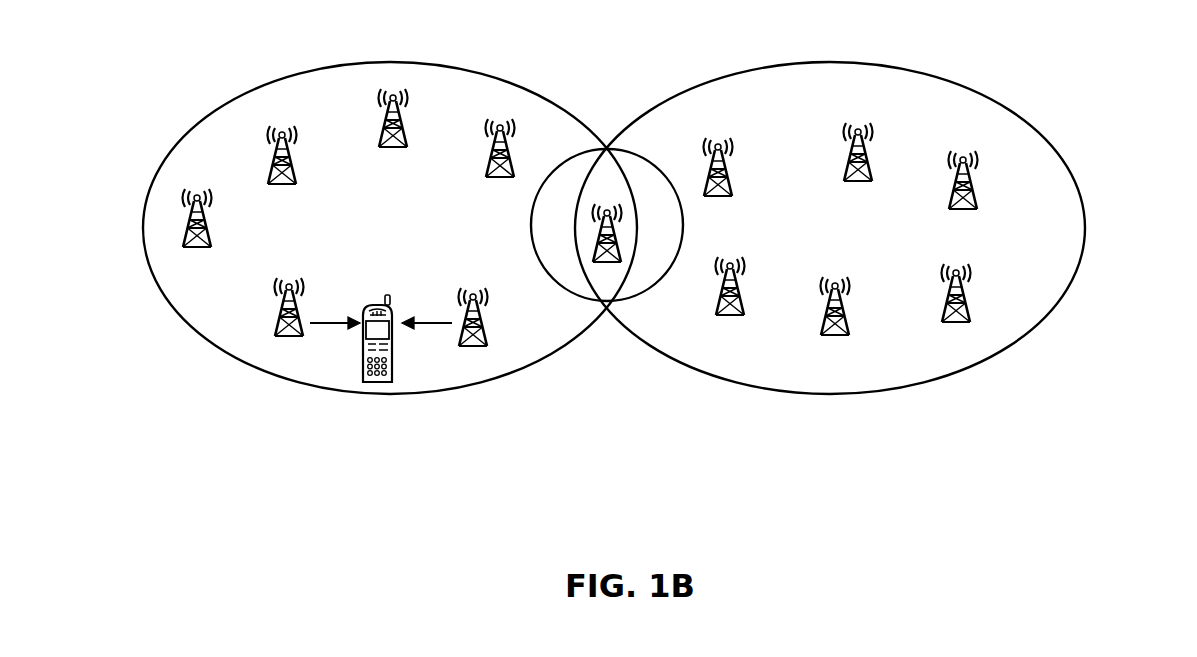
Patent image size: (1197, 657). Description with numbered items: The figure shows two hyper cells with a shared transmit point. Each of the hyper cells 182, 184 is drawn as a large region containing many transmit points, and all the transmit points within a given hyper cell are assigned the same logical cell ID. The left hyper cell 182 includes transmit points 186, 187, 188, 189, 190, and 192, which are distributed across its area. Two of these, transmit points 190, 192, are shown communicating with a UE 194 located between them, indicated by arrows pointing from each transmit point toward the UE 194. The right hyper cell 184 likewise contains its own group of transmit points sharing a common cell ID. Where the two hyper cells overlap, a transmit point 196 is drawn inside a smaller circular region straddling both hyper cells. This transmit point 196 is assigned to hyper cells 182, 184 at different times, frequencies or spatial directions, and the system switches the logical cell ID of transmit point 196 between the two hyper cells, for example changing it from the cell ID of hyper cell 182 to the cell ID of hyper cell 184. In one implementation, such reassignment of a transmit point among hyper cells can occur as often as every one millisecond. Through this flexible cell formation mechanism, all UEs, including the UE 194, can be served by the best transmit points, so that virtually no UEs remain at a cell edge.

The hyper cell 182 is at (135, 183).
The hyper cell 184 is at (1093, 188).
The transmit point 186 is at (363, 93).
The transmit point 187 is at (482, 108).
The transmit point 188 is at (245, 135).
The transmit point 189 is at (187, 257).
The transmit point 190 is at (450, 340).
The transmit point 192 is at (282, 340).
The UE 194 is at (370, 380).
The transmit point 196 is at (603, 277).